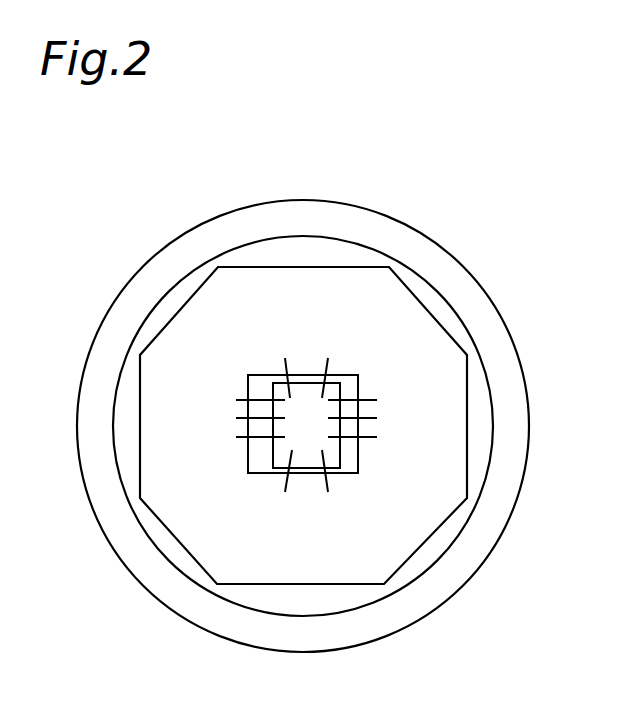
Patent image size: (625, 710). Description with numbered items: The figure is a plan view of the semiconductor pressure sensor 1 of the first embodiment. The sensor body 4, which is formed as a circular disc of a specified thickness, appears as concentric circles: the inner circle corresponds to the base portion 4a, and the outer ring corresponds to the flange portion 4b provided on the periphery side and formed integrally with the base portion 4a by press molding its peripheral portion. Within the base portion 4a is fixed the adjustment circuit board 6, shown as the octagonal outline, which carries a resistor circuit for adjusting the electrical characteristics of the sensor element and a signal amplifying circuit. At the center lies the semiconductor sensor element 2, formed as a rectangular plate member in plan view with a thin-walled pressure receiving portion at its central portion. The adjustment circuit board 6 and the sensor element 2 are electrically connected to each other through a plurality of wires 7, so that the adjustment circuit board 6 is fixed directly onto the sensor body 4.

The pressure sensor 1 is at (124, 270).
The semiconductor sensor element 2 is at (303, 388).
The sensor body 4 is at (534, 246).
The base portion 4a is at (426, 281).
The flange portion 4b is at (418, 233).
The adjustment circuit board 6 is at (467, 438).
The wires 7 is at (285, 485).